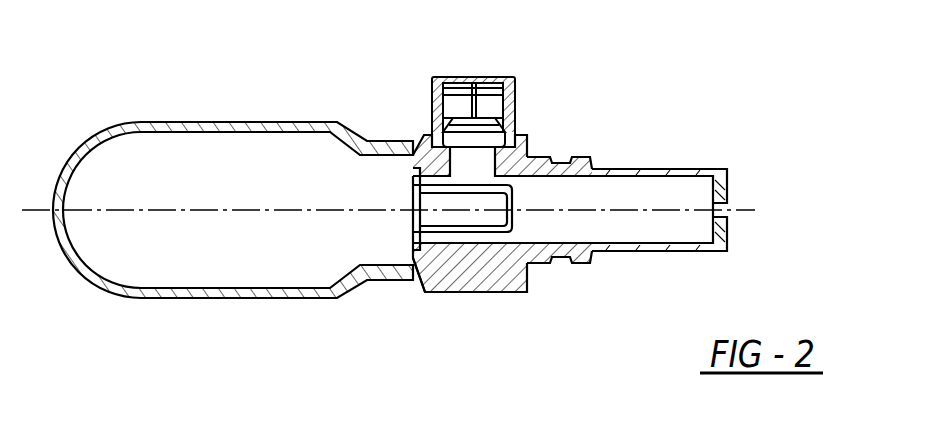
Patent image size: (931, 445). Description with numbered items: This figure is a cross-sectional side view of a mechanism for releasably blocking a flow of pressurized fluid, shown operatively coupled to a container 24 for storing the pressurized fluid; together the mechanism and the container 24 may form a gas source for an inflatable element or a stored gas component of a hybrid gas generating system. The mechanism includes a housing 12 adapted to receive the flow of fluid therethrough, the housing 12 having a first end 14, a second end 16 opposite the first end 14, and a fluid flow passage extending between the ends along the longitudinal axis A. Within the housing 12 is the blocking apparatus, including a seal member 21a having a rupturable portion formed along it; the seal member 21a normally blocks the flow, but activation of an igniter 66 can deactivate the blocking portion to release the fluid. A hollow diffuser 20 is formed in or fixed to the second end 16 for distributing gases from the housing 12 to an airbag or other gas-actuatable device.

The housing 12 is at (530, 287).
The first end 14 is at (433, 277).
The second end 16 is at (520, 268).
The hollow diffuser 20 is at (727, 169).
The seal member 21a is at (438, 222).
The container 24 is at (235, 300).
The igniter 66 is at (473, 77).
The longitudinal axis A is at (744, 212).